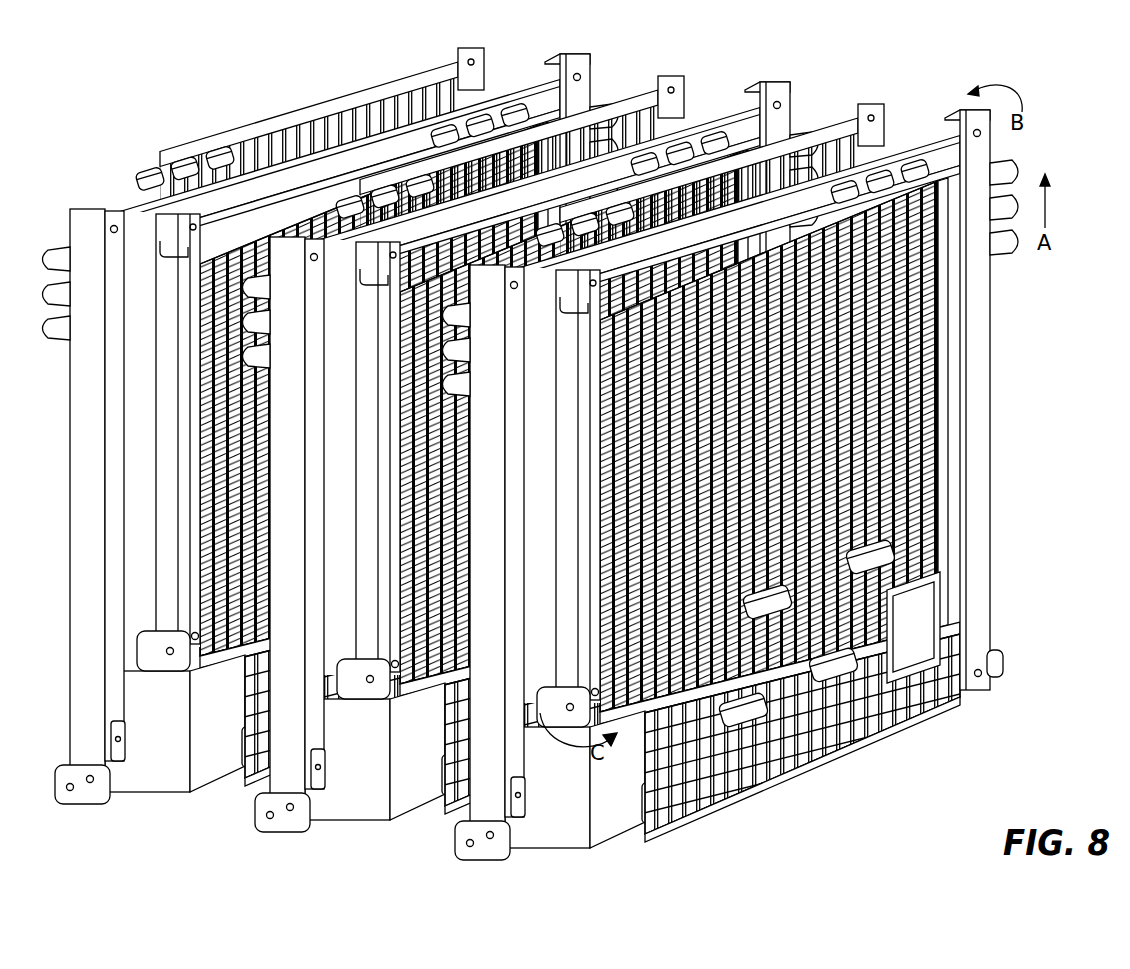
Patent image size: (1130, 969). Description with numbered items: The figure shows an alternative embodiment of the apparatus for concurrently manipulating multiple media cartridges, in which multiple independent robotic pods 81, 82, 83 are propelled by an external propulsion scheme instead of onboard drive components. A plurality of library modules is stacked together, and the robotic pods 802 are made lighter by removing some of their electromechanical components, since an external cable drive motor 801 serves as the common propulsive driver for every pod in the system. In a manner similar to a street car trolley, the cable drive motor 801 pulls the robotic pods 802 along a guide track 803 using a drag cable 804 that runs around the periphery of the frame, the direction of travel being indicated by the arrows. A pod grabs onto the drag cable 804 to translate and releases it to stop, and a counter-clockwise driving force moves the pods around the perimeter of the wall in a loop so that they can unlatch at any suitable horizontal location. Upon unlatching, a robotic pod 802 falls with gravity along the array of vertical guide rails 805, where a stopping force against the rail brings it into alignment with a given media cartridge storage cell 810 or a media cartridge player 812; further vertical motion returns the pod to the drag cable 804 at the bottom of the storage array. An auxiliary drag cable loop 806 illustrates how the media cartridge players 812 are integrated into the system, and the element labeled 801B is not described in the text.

The robotic pod 81 is at (753, 470).
The robotic pod 82 is at (333, 841).
The robotic pod 83 is at (143, 818).
The external cable drive motor 801 is at (545, 722).
The latch clip on right post 801B is at (1003, 660).
The robotic pod 802 is at (1013, 166).
The guide track 803 is at (940, 160).
The drag cable 804 is at (927, 118).
The vertical guide rails 805 is at (922, 367).
The auxiliary drag cable loop 806 is at (919, 715).
The media cartridge storage cell 810 is at (912, 468).
The media cartridge player 812 is at (884, 620).